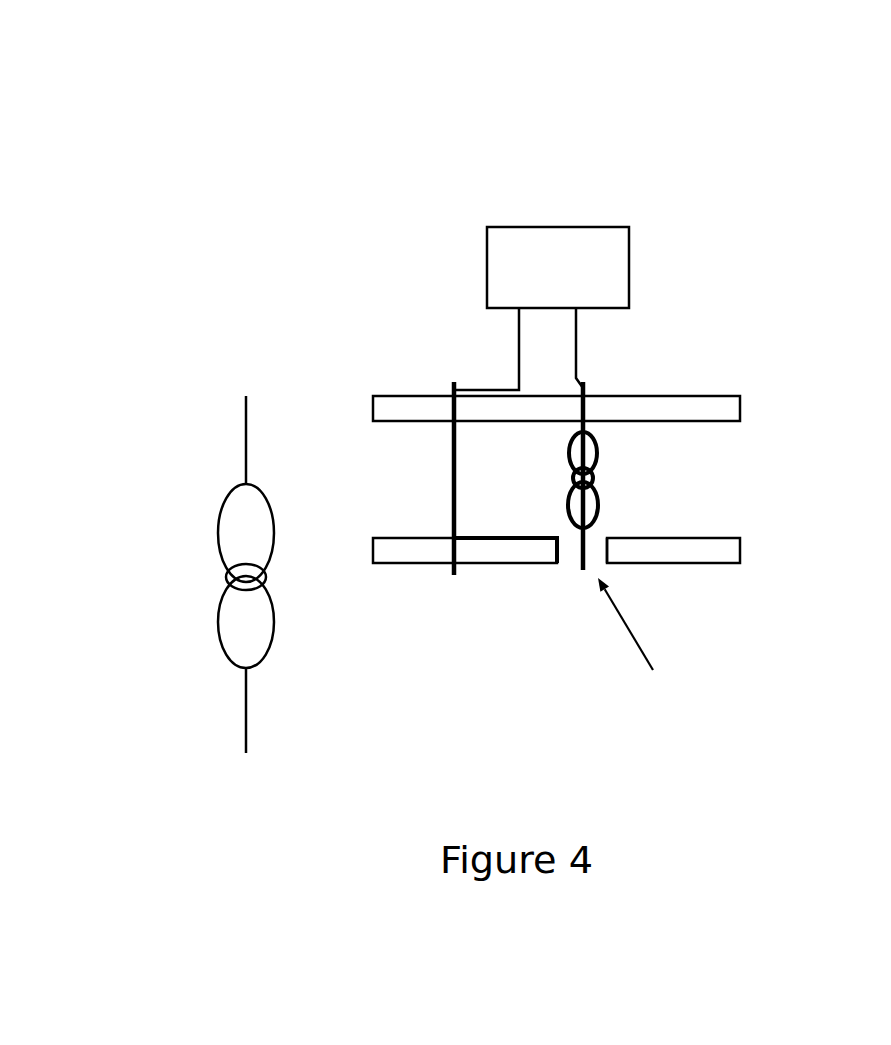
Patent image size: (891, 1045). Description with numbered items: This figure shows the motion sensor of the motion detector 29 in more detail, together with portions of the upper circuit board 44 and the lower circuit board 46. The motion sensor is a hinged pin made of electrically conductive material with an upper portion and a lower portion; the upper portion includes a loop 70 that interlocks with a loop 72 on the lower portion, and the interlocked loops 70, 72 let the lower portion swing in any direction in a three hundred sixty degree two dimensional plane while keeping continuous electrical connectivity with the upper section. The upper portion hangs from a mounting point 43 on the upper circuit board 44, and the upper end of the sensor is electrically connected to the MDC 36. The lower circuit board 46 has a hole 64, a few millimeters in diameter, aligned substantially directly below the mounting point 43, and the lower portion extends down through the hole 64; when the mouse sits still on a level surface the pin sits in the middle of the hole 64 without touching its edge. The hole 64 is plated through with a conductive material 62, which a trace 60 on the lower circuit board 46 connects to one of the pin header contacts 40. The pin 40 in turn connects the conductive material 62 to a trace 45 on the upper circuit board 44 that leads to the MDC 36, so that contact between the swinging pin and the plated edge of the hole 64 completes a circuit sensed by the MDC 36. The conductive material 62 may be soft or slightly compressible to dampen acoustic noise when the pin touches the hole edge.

The motion detector 29 is at (805, 170).
The MDC 36 is at (630, 238).
The pin header contact 40 is at (451, 430).
The mounting point 43 is at (586, 403).
The upper circuit board 44 is at (655, 390).
The trace 45 is at (488, 388).
The lower circuit board 46 is at (708, 537).
The trace 60 is at (497, 537).
The conductive material 62 is at (608, 545).
The hole 64 is at (554, 590).
The loop 70 is at (223, 503).
The loop 72 is at (222, 588).